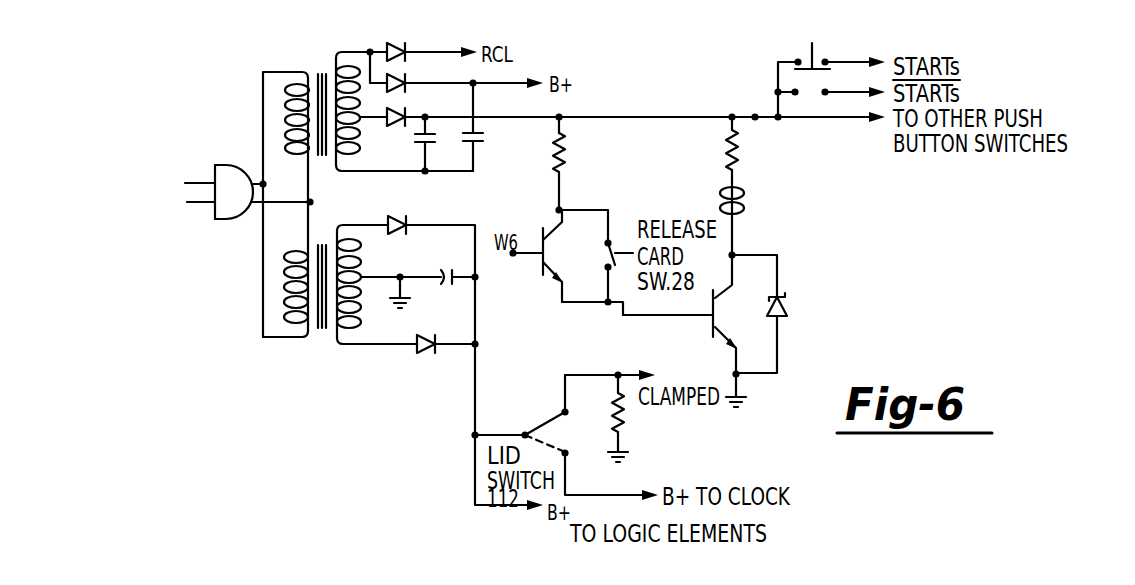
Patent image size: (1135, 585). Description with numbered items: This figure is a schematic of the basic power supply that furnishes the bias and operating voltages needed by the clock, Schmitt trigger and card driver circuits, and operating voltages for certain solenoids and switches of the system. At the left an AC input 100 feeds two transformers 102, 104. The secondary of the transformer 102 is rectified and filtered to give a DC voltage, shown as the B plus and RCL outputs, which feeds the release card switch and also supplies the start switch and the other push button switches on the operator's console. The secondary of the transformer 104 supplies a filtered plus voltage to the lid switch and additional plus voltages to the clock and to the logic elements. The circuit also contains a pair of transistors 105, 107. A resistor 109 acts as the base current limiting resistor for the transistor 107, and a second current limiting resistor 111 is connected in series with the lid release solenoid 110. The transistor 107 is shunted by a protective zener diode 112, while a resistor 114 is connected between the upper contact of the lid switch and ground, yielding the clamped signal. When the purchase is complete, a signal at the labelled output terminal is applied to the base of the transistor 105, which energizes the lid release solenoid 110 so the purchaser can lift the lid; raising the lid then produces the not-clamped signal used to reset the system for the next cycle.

The AC input 100 is at (197, 178).
The transformer 102 is at (324, 56).
The transformer 104 is at (320, 352).
The transistor 105 is at (542, 260).
The transistor 107 is at (713, 323).
The resistor 109 is at (565, 151).
The lid release solenoid 110 is at (746, 197).
The second current limiting resistor 111 is at (727, 150).
The protective zener diode 112 is at (788, 302).
The resistor 114 is at (623, 420).